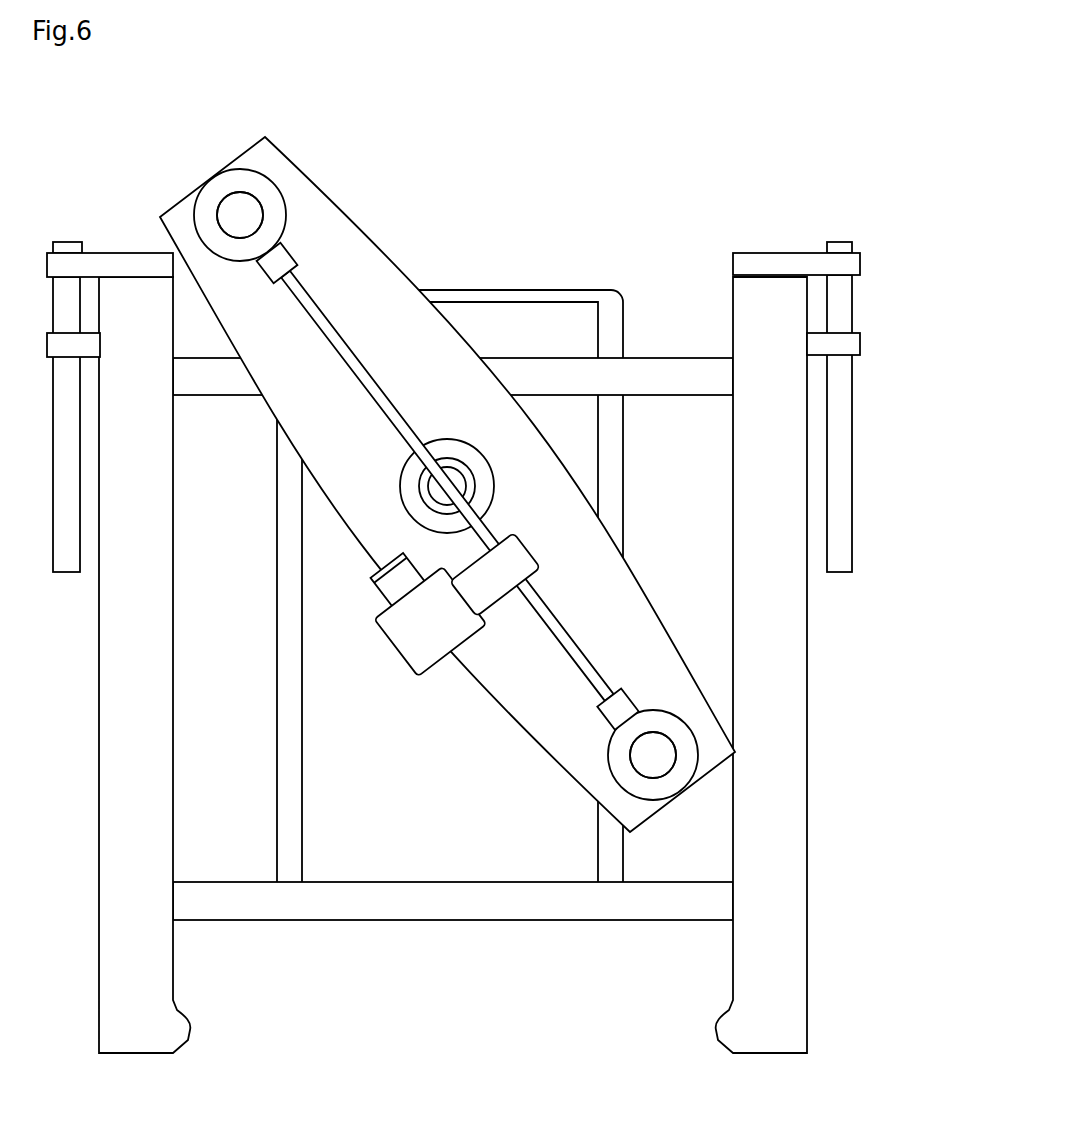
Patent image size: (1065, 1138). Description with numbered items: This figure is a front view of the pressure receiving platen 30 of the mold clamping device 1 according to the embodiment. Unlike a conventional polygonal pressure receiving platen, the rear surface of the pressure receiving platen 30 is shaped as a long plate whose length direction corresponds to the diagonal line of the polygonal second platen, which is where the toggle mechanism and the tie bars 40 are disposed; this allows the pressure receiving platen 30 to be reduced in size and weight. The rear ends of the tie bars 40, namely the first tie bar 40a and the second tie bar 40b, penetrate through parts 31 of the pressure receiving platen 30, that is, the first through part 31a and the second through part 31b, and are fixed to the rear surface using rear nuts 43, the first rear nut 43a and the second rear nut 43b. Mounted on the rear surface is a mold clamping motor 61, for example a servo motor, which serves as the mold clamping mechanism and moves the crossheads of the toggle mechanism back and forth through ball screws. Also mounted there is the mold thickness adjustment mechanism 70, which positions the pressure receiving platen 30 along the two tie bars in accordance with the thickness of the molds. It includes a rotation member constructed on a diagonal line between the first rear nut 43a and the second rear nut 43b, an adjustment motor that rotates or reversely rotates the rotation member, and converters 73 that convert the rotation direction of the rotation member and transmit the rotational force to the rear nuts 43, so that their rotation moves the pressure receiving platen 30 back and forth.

The apparatus 1 is at (531, 198).
The pressure receiving platen 30 is at (393, 298).
The through parts 31 is at (481, 524).
The first through part 31a is at (217, 212).
The second through part 31b is at (656, 781).
The tie bars 40 is at (574, 437).
The first tie bar 40a is at (245, 212).
The second tie bar 40b is at (667, 745).
The rear nuts 43 is at (519, 460).
The first rear nut 43a is at (205, 185).
The second rear nut 43b is at (682, 773).
The mold clamping motor 61 is at (487, 472).
The mold thickness adjustment mechanism 70 is at (402, 548).
The converters 73 is at (448, 486).